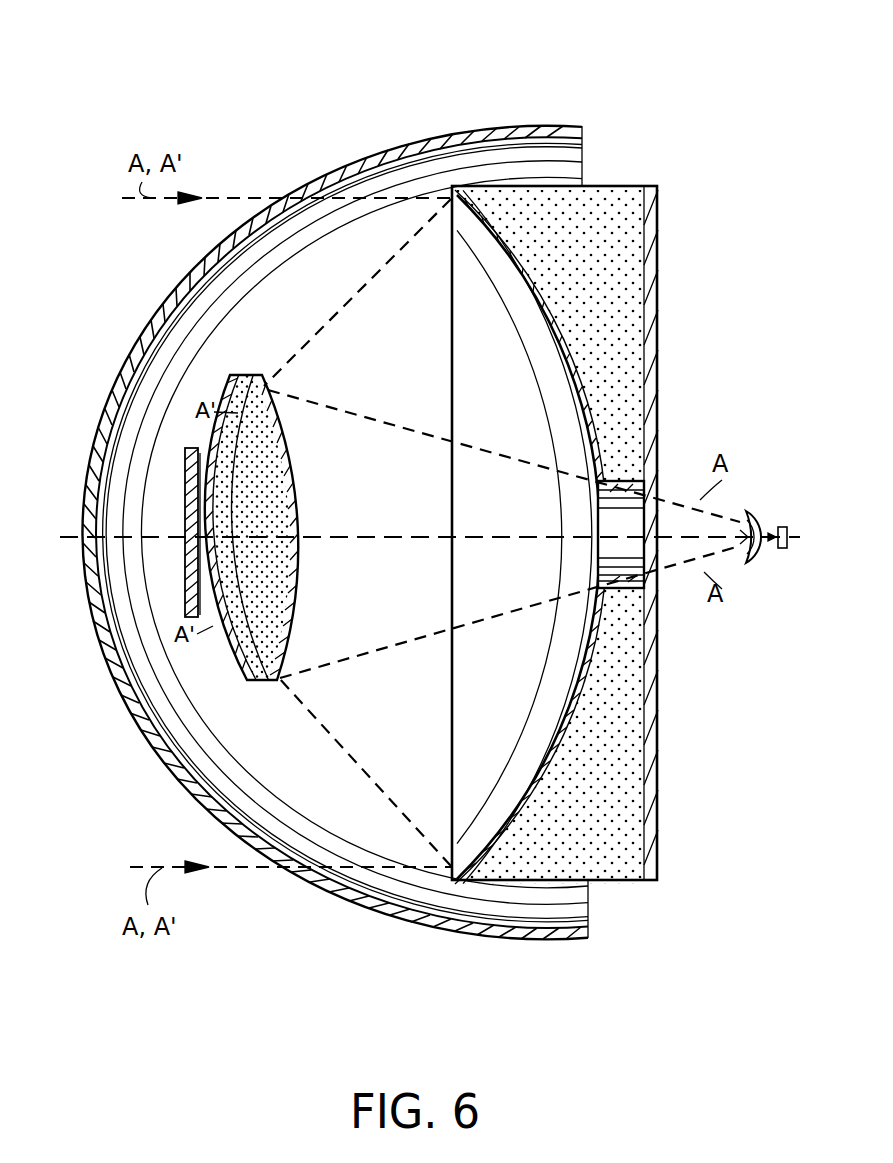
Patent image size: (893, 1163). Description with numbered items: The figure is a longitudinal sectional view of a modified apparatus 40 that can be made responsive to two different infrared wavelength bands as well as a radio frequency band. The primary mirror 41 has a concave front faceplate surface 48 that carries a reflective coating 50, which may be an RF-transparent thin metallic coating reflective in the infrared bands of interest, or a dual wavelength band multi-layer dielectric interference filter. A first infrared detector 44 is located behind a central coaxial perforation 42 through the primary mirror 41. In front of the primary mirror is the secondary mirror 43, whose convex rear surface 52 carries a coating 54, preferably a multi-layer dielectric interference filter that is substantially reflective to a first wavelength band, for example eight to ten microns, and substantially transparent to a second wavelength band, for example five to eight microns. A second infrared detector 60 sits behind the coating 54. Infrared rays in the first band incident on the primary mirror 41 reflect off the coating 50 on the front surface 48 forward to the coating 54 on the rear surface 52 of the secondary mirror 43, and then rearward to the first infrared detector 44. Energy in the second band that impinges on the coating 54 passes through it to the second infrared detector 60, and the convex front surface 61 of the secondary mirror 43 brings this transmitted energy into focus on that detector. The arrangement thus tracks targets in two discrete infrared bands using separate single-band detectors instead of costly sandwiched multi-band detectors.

The modified apparatus 40 is at (694, 78).
The primary mirror 41 is at (635, 260).
The central coaxial perforation 42 is at (600, 526).
The secondary mirror 43 is at (247, 373).
The first infrared detector 44 is at (782, 527).
The concave front faceplate surface 48 is at (603, 650).
The reflective coating 50 is at (576, 706).
The convex rear surface 52 is at (272, 428).
The coating 54 is at (299, 481).
The second infrared detector 60 is at (185, 516).
The convex front surface 61 is at (229, 650).